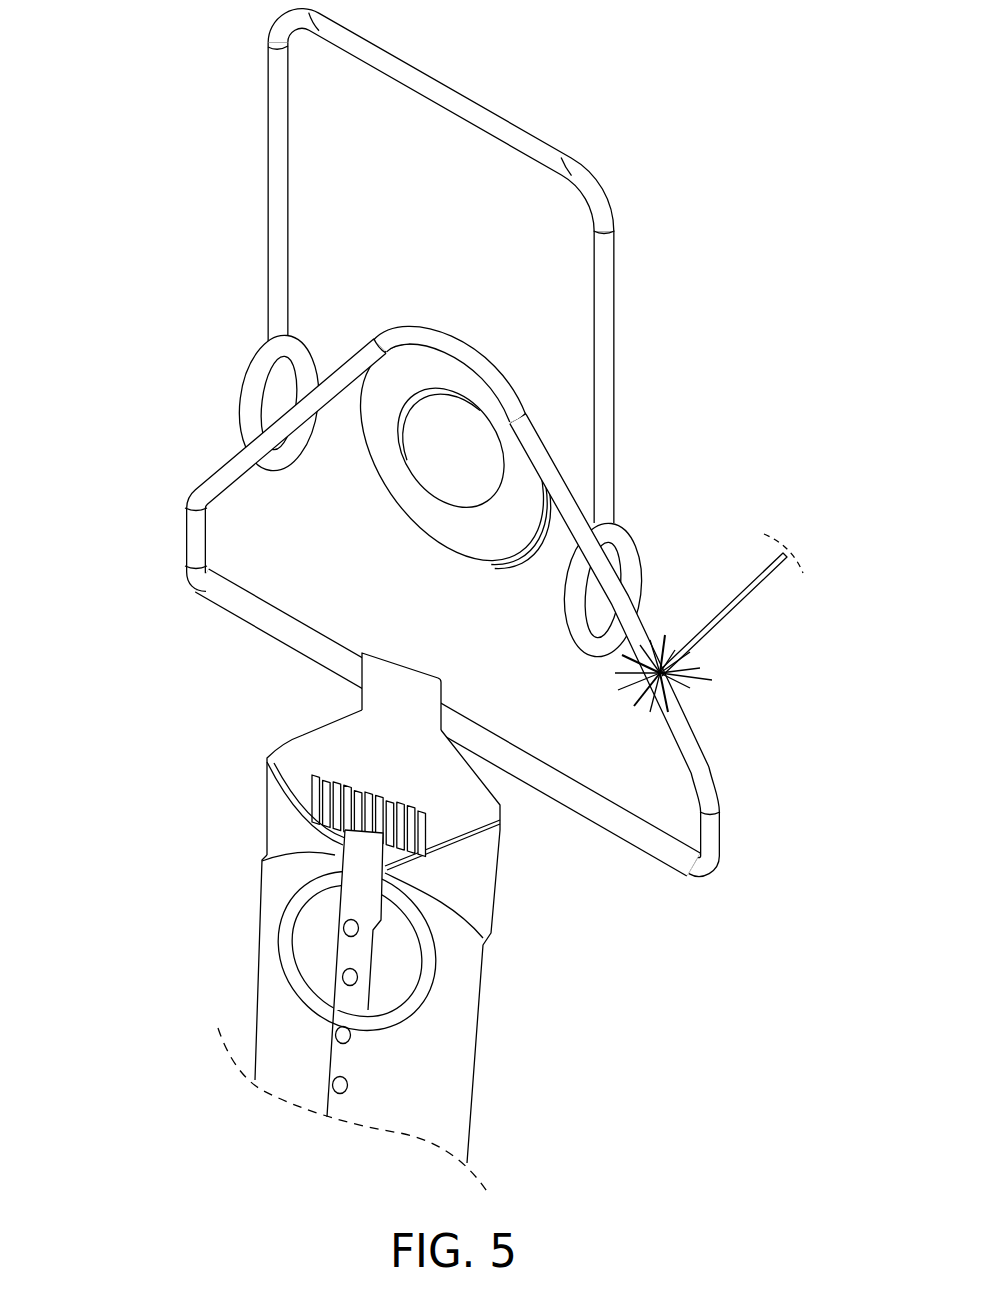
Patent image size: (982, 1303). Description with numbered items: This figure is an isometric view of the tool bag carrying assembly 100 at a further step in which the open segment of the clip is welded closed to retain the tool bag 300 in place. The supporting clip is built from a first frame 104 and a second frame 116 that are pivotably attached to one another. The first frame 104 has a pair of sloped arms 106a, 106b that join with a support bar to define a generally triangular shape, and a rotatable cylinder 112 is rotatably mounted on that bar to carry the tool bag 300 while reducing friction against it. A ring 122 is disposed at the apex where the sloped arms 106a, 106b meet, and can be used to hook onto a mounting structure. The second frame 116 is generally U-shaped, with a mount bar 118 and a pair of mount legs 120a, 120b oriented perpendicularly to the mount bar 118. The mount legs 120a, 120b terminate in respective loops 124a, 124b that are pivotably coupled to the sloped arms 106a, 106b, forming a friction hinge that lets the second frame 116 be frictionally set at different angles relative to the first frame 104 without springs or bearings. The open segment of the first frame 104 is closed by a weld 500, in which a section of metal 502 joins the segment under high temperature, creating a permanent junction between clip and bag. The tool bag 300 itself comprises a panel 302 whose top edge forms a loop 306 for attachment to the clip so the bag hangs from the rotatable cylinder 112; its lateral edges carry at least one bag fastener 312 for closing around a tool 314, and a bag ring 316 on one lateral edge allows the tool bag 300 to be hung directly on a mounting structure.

The tool bag carrying assembly 100 is at (432, 440).
The first frame 104 is at (449, 601).
The sloped arm 106a is at (231, 464).
The sloped arm 106b is at (673, 643).
The rotatable cylinder 112 is at (429, 723).
The second frame 116 is at (436, 268).
The mount bar 118 is at (441, 122).
The mount leg 120a is at (215, 194).
The mount leg 120b is at (663, 377).
The ring 122 is at (455, 457).
The loop 124a is at (235, 400).
The loop 124b is at (643, 563).
The tool bag 300 is at (367, 898).
The panel 302 is at (359, 951).
The loop 306 is at (425, 667).
The bag fastener 312 is at (269, 1087).
The tool 314 is at (302, 781).
The bag ring 316 is at (430, 951).
The weld 500 is at (745, 605).
The section of metal 502 is at (705, 683).